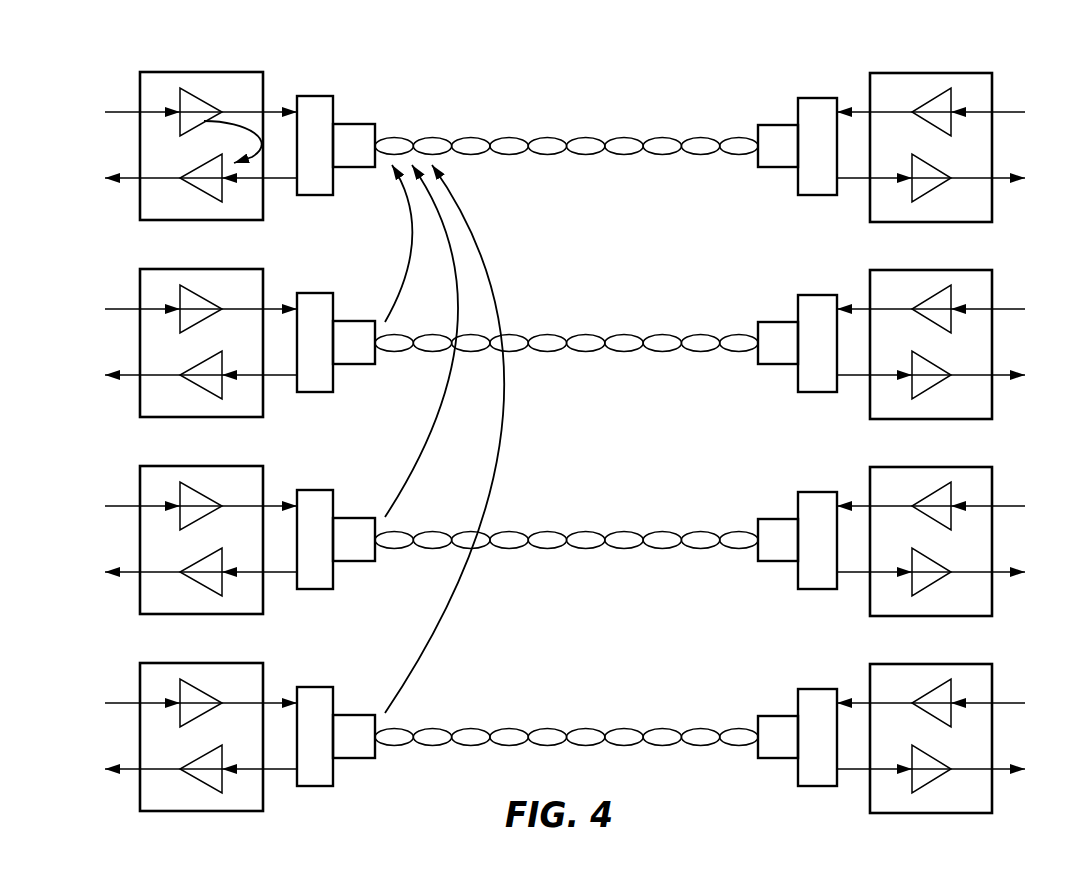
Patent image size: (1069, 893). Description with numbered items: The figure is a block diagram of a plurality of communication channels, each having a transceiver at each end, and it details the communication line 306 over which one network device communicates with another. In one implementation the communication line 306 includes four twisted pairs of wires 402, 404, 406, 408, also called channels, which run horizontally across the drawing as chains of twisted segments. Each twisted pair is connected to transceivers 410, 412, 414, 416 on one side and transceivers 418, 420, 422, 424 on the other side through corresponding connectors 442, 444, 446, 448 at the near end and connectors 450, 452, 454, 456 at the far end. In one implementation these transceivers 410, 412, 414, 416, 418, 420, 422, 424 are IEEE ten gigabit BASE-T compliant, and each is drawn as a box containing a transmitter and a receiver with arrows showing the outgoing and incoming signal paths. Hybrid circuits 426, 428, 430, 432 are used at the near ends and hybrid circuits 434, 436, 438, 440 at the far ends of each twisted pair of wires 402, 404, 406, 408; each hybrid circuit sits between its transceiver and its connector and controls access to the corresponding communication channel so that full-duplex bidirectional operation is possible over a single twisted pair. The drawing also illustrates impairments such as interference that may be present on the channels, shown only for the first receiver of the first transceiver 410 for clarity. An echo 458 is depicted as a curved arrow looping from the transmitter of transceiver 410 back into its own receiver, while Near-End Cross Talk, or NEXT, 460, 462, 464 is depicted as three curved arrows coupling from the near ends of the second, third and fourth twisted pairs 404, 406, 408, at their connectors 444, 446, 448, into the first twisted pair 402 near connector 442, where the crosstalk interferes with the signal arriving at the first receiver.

The communication line 306 is at (508, 52).
The twisted pair of wires 402 is at (560, 137).
The twisted pair of wires 404 is at (566, 319).
The twisted pair of wires 406 is at (566, 516).
The twisted pair of wires 408 is at (566, 713).
The transceiver 410 is at (184, 210).
The transceiver 412 is at (201, 343).
The transceiver 414 is at (201, 540).
The transceiver 416 is at (201, 737).
The transceiver 418 is at (982, 211).
The transceiver 420 is at (931, 344).
The transceiver 422 is at (931, 541).
The transceiver 424 is at (931, 738).
The hybrid circuit 426 is at (315, 96).
The hybrid circuit 428 is at (296, 317).
The hybrid circuit 430 is at (296, 514).
The hybrid circuit 432 is at (296, 711).
The hybrid circuit 434 is at (818, 98).
The hybrid circuit 436 is at (798, 317).
The hybrid circuit 438 is at (798, 514).
The hybrid circuit 440 is at (798, 711).
The connector 442 is at (355, 124).
The connector 444 is at (368, 314).
The connector 446 is at (371, 512).
The connector 448 is at (371, 709).
The connector 450 is at (767, 125).
The connector 452 is at (754, 318).
The connector 454 is at (754, 515).
The connector 456 is at (754, 712).
The echo 458 is at (248, 120).
The Near-End Cross Talk 460 is at (413, 240).
The Near-End Cross Talk 462 is at (440, 418).
The Near-End Cross Talk 464 is at (445, 630).